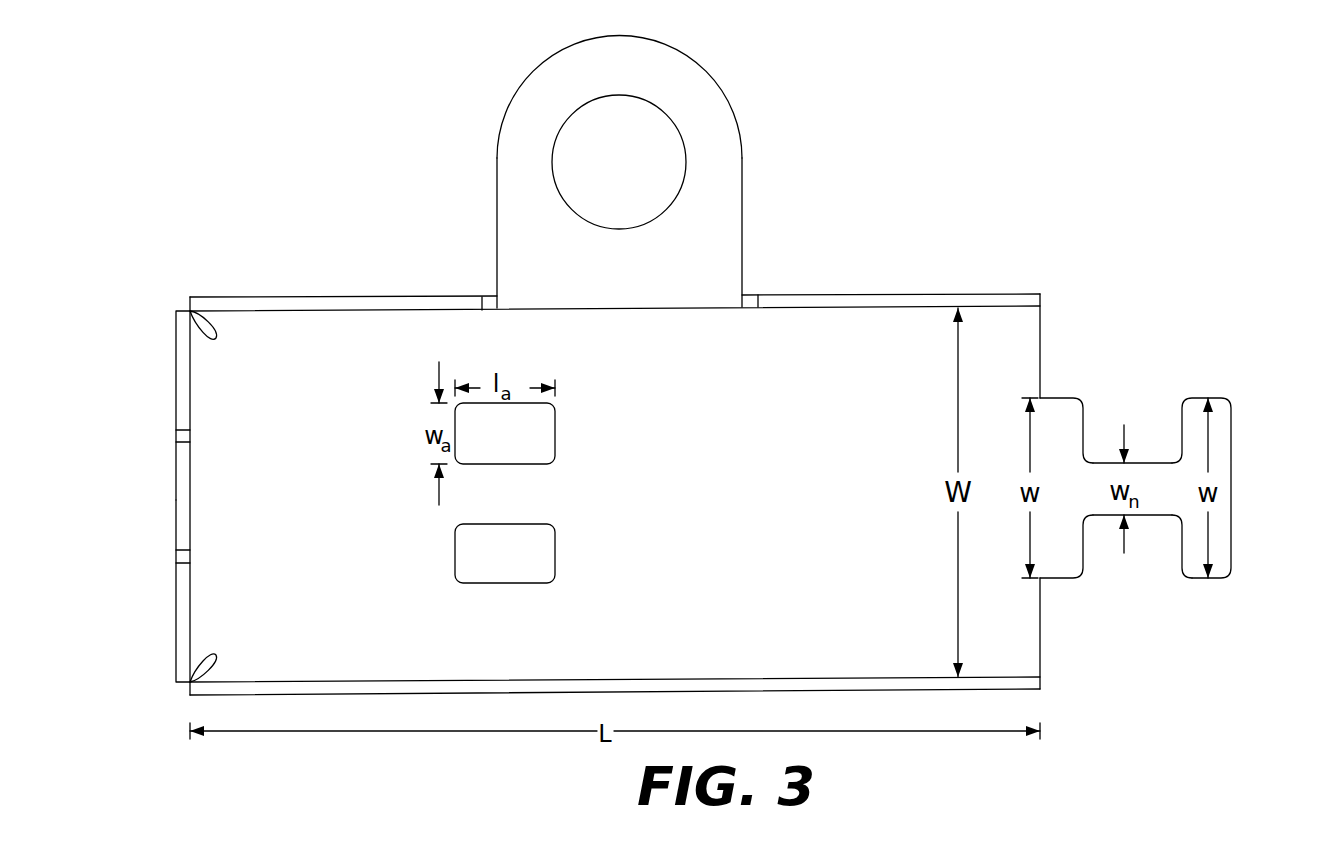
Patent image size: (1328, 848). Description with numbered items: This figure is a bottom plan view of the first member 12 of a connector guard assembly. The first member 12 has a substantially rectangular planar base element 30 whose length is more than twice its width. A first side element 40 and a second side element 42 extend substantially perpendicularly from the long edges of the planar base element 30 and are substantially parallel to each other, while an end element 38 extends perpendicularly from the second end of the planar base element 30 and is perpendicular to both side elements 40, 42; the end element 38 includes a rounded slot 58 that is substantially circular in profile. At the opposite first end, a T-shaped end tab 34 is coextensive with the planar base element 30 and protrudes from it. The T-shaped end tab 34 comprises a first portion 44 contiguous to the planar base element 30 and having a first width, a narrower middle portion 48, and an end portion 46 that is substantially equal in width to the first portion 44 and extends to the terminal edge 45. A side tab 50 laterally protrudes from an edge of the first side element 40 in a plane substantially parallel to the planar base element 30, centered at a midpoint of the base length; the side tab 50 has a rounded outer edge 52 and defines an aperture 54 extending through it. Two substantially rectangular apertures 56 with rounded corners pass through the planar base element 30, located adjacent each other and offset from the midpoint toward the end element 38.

The first member 12 is at (268, 250).
The planar base element 30 is at (615, 494).
The T-shaped end tab 34 is at (1177, 349).
The end element 38 is at (176, 642).
The first side element 40 is at (328, 297).
The second side element 42 is at (288, 695).
The first portion 44 is at (1063, 578).
The terminal edge 45 is at (1232, 500).
The end portion 46 is at (1208, 578).
The middle portion 48 is at (1137, 515).
The side tab 50 is at (674, 167).
The outer edge 52 is at (677, 50).
The aperture 54 is at (684, 148).
The apertures 56 is at (555, 437).
The rounded slot 58 is at (176, 492).